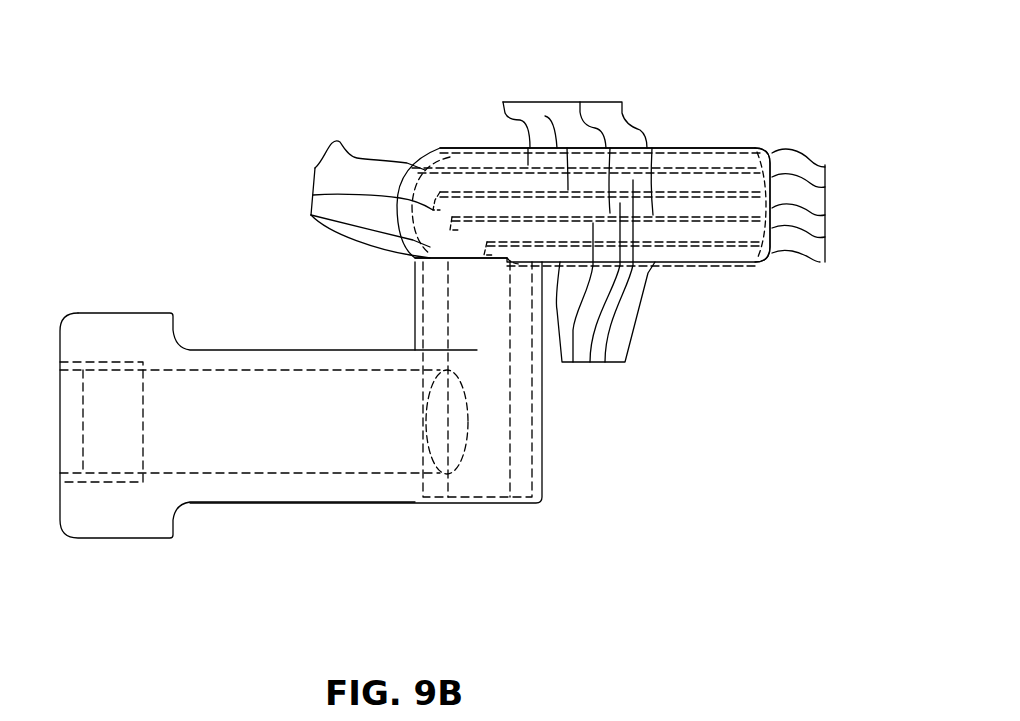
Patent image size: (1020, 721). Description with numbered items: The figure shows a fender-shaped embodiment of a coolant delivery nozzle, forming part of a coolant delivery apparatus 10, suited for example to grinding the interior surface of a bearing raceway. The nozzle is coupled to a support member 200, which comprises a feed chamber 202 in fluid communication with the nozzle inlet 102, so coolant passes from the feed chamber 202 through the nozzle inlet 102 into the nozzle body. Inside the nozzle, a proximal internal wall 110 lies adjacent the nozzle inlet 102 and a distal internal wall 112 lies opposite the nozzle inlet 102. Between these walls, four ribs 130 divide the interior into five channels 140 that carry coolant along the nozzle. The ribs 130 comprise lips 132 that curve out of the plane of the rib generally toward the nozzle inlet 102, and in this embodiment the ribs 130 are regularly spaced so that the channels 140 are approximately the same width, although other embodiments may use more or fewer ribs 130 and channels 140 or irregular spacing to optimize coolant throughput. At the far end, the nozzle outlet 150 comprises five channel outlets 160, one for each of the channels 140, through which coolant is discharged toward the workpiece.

The fluid delivery assembly 10 is at (222, 132).
The nozzle inlet 102 is at (440, 260).
The proximal internal wall 110 is at (708, 260).
The distal internal wall 112 is at (470, 148).
The ribs 130 is at (558, 100).
The lips 132 is at (317, 167).
The channels 140 is at (593, 362).
The nozzle outlet 150 is at (785, 132).
The channel outlets 160 is at (825, 207).
The support member 200 is at (167, 297).
The feed chamber 202 is at (322, 434).